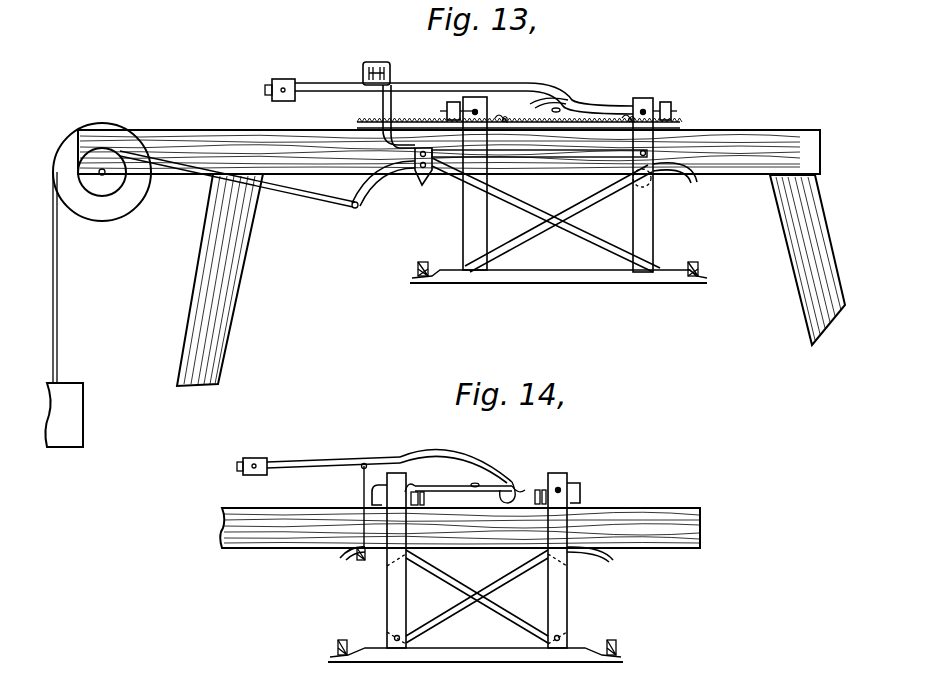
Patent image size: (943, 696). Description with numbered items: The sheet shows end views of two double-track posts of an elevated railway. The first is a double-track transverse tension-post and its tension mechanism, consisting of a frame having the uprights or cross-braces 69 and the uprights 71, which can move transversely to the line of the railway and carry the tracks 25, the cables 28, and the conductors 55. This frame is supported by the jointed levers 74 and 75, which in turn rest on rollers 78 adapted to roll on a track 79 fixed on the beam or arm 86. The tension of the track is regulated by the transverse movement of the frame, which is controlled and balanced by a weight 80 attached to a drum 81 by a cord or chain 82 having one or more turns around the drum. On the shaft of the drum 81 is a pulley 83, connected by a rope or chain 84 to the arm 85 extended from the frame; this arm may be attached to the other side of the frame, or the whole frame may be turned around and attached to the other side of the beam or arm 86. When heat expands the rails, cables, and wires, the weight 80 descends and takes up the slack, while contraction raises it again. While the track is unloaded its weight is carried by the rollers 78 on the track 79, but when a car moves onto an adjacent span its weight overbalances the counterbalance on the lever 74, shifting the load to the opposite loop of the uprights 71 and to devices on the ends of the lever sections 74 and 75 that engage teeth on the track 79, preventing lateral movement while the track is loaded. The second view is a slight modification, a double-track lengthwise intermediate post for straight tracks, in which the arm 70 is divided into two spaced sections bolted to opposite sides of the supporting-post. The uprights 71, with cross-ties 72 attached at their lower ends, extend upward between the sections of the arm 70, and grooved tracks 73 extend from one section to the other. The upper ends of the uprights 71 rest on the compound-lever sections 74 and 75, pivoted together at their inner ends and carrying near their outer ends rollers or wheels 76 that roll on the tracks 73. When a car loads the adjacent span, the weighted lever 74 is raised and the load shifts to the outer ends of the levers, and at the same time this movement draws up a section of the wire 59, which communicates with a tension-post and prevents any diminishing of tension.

In FIG. 13, the tracks 25 is at (700, 272).
In FIG. 13, the cables 28 is at (646, 112).
In FIG. 14, the cables 28 is at (575, 490).
In FIG. 13, the conductors 55 is at (697, 184).
In FIG. 14, the conductors 55 is at (340, 560).
In FIG. 14, the wire 59 is at (372, 492).
In FIG. 13, the uprights or cross-braces 69 is at (565, 218).
In FIG. 14, the uprights or cross-braces 69 is at (490, 585).
In FIG. 14, the arm 70 is at (648, 515).
In FIG. 13, the uprights 71 is at (463, 232).
In FIG. 14, the uprights 71 is at (387, 590).
In FIG. 14, the cross-ties 72 is at (506, 662).
In FIG. 14, the grooved tracks 73 is at (420, 505).
In FIG. 13, the lever section 74 is at (565, 92).
In FIG. 14, the lever section 74 is at (525, 460).
In FIG. 13, the lever section 75 is at (533, 102).
In FIG. 14, the lever section 75 is at (460, 486).
In FIG. 14, the rollers or wheels 76 is at (416, 492).
In FIG. 13, the rollers 78 is at (503, 117).
In FIG. 13, the track 79 is at (678, 125).
In FIG. 13, the weight 80 is at (72, 419).
In FIG. 13, the drum 81 is at (128, 212).
In FIG. 13, the cord or chain 82 is at (60, 303).
In FIG. 13, the pulley 83 is at (113, 184).
In FIG. 13, the rope or chain 84 is at (304, 196).
In FIG. 13, the arm 85 is at (370, 200).
In FIG. 13, the beam or arm 86 is at (300, 142).